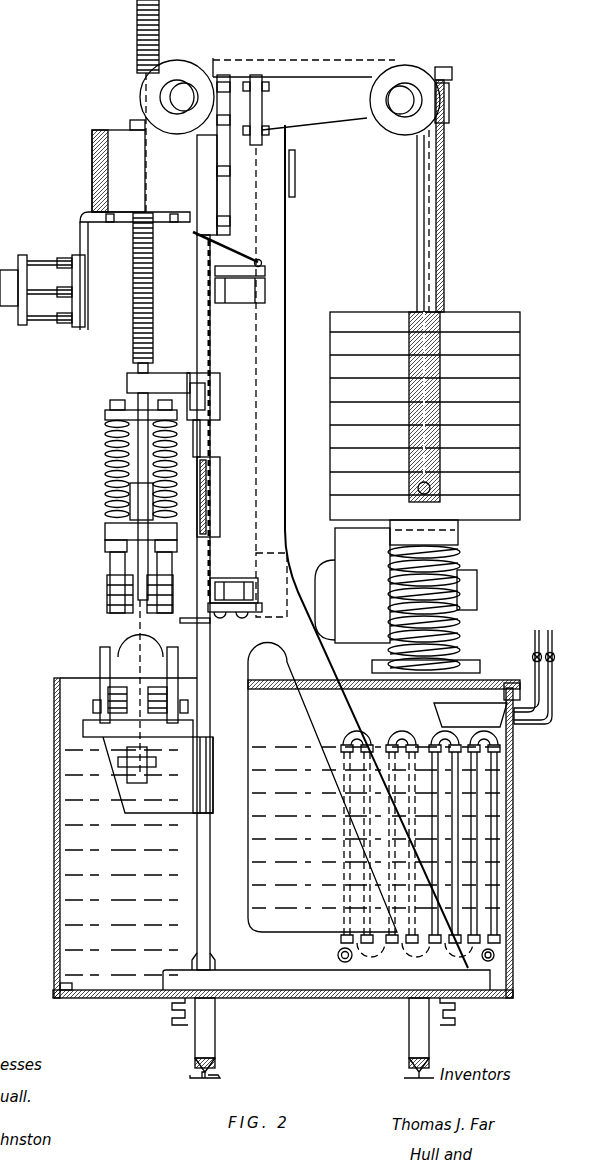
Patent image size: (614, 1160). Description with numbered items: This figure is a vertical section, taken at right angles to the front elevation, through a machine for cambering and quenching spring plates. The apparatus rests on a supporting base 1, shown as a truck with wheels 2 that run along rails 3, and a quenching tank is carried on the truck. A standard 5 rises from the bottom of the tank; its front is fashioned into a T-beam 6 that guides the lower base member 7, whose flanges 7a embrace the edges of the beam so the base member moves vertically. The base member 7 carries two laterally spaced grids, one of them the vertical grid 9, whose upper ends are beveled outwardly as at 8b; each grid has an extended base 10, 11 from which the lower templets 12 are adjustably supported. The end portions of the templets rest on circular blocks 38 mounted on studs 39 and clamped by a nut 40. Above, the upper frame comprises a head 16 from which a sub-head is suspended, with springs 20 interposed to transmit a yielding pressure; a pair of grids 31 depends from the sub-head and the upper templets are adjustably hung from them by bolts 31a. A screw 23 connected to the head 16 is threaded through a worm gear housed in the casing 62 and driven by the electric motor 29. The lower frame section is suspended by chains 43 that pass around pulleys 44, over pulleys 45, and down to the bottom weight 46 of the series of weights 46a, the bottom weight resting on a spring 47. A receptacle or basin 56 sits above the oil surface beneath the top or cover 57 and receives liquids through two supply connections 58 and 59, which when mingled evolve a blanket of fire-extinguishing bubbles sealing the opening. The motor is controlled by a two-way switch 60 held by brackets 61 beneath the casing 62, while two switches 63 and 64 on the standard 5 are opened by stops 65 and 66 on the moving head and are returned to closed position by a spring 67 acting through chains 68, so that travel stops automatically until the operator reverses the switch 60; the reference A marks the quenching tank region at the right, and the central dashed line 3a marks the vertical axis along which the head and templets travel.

The supporting base 1 is at (165, 1008).
The wheels 2 is at (294, 1028).
The rails 3 is at (312, 1062).
The center rod 3a is at (156, 687).
The standard 5 is at (212, 552).
The T-beam 6 is at (282, 861).
The base member 7 is at (158, 775).
The flanges 7a is at (217, 774).
The beveled upper end 8b is at (106, 670).
The vertical grid 9 is at (133, 645).
The grid base 10 is at (265, 738).
The grid base 11 is at (55, 815).
The lower templet 12 is at (178, 680).
The head 16 is at (55, 383).
The springs 20 is at (105, 455).
The screw 23 is at (118, 293).
The electric motor 29 is at (397, 600).
The grids 31 is at (110, 578).
The bolts 31a is at (105, 546).
The blocks 38 is at (218, 680).
The studs 39 is at (93, 706).
The nut 40 is at (83, 726).
The chains 43 is at (320, 62).
The pulleys 44 is at (178, 65).
The pulleys 45 is at (395, 128).
The bottom weight 46 is at (443, 428).
The series of weights 46a is at (522, 432).
The spring 47 is at (482, 568).
The receptacle or basin 56 is at (470, 715).
The top or cover 57 is at (508, 650).
The liquid supply connection 58 is at (545, 690).
The liquid supply connection 59 is at (535, 724).
The two-way electric switch 60 is at (40, 320).
The brackets 61 is at (88, 238).
The casing 62 is at (114, 171).
The electric switch 63 is at (379, 196).
The electric switch 64 is at (258, 570).
The stop 65 is at (196, 245).
The stop 66 is at (203, 440).
The spring 67 is at (221, 395).
The chains 68 is at (225, 480).
The heat exchanger A is at (512, 896).